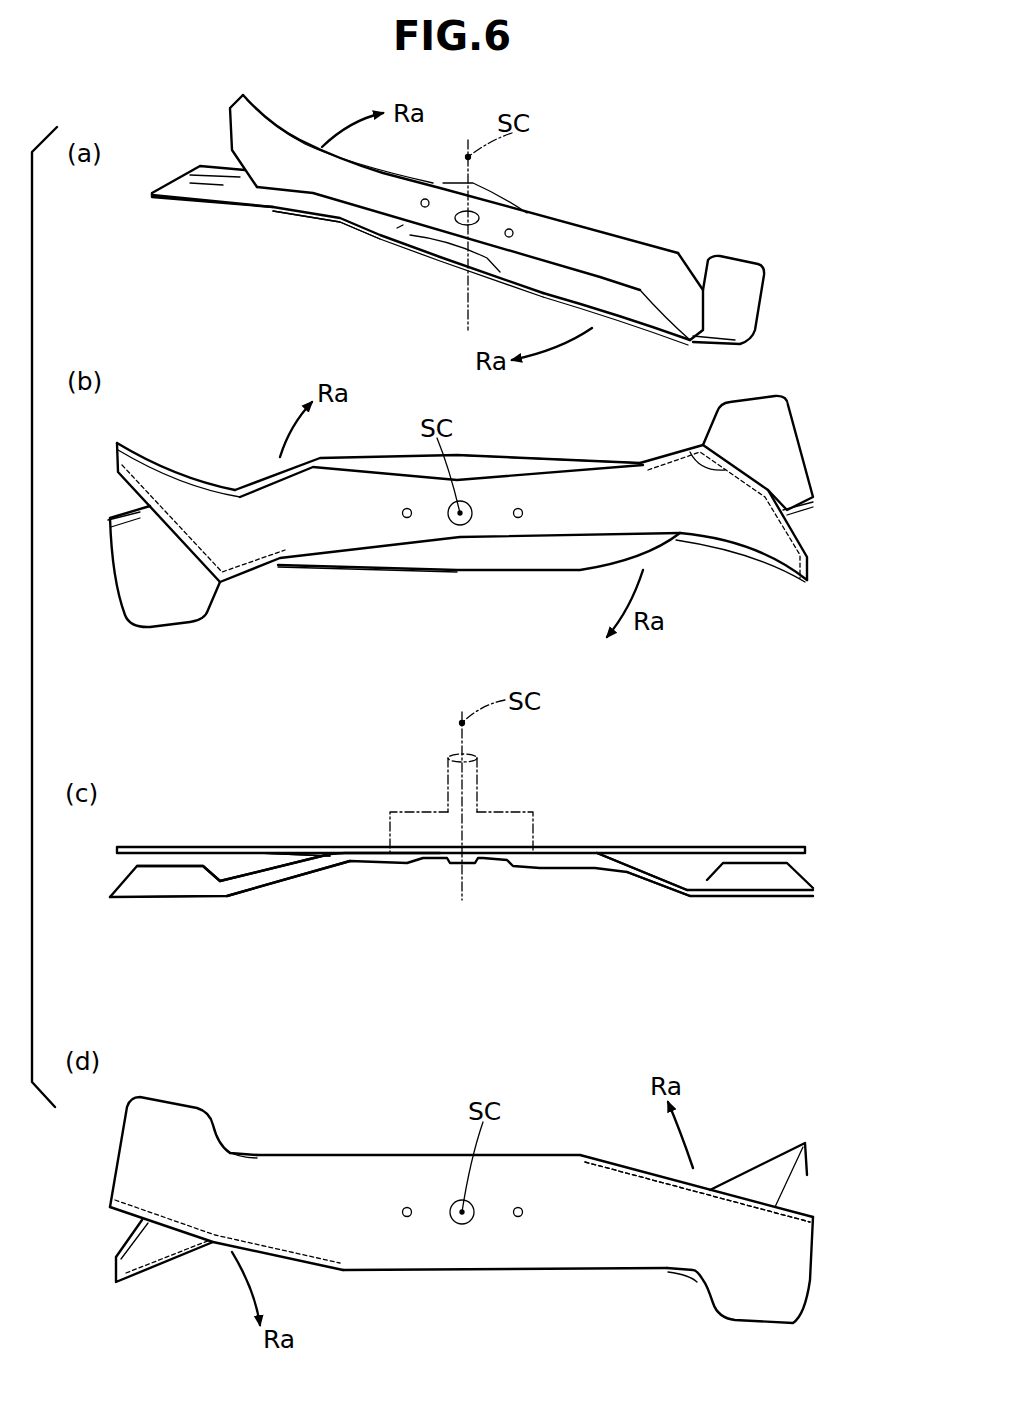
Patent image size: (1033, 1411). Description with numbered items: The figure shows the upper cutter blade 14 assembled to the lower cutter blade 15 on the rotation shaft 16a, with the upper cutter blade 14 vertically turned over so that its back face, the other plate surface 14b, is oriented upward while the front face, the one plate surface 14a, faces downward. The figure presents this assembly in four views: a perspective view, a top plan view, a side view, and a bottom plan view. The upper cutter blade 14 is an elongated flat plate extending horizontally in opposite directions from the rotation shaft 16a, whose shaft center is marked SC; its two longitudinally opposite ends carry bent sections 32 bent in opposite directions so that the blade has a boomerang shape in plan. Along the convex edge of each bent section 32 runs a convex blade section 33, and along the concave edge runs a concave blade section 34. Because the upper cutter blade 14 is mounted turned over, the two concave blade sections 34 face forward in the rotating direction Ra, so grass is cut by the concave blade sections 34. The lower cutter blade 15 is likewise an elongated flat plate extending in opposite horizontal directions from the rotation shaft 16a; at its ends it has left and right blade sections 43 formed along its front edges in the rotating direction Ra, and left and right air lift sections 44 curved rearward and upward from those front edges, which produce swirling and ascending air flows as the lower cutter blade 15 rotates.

The upper cutter blade 14 is at (323, 200).
The one plate surface 14a is at (550, 855).
The other plate surface 14b is at (563, 242).
The lower cutter blade 15 is at (223, 208).
The rotation shaft 16a is at (480, 780).
The bent section 32 is at (280, 172).
The convex blade section 33 is at (190, 563).
The concave blade section 34 is at (285, 130).
The blade section 43 is at (215, 170).
The air lift section 44 is at (188, 190).